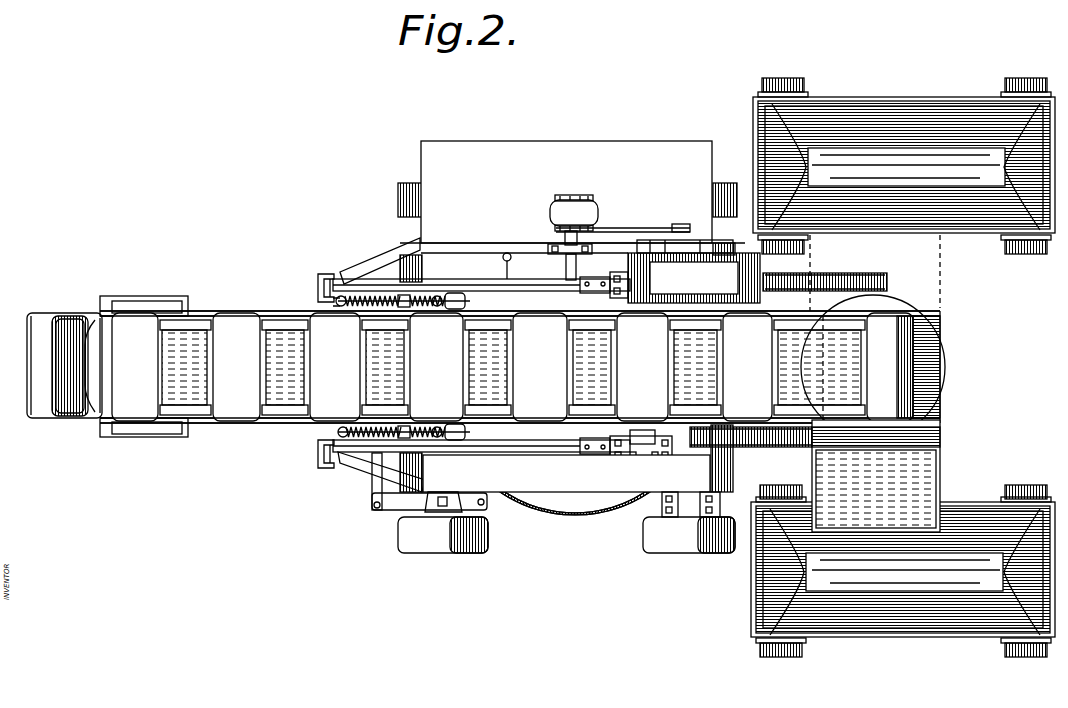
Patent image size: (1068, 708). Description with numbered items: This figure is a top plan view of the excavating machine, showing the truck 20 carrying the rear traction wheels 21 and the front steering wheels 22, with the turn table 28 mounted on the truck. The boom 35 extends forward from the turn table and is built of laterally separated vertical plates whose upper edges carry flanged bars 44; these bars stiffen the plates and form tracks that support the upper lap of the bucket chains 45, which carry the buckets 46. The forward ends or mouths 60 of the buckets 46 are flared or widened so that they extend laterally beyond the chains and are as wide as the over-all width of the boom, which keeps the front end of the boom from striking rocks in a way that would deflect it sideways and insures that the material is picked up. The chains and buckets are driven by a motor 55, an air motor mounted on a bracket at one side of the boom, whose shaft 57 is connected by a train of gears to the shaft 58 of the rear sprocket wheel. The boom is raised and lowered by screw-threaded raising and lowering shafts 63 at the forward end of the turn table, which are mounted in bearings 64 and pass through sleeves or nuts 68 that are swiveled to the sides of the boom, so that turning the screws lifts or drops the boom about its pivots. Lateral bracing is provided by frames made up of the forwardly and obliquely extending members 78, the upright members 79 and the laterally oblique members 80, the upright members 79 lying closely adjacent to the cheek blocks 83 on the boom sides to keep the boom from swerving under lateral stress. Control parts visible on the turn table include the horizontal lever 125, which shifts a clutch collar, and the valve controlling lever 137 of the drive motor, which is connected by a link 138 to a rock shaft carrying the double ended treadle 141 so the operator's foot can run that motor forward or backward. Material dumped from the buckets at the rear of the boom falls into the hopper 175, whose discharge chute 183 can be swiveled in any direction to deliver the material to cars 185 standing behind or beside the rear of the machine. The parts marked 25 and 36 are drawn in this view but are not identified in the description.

The truck 20 is at (578, 514).
The rear traction wheels 21 is at (726, 182).
The front steering wheels 22 is at (406, 182).
The bracket 25 is at (432, 502).
The turn table 28 is at (566, 473).
The boom 35 is at (285, 367).
The plate 36 is at (565, 307).
The flanged bars 44 is at (247, 314).
The bucket chains 45 is at (250, 312).
The buckets 46 is at (198, 367).
The motor 55 is at (694, 271).
The shaft 57 is at (707, 447).
The shaft of the rear sprocket wheel 58 is at (844, 273).
The mouths of the buckets 60 is at (72, 310).
The screw-threaded raising and lowering shafts 63 is at (346, 299).
The bearings 64 is at (446, 296).
The sleeves or nuts 68 is at (406, 304).
The forwardly and obliquely extending members 78 is at (480, 279).
The upright members 79 is at (334, 300).
The laterally oblique members 80 is at (380, 257).
The cheek blocks 83 is at (362, 414).
The horizontal lever 125 is at (511, 265).
The valve controlling lever 137 is at (682, 223).
The link 138 is at (612, 227).
The double ended foot piece or treadle 141 is at (586, 200).
The hopper 175 is at (948, 342).
The discharge spout or chute 183 is at (944, 450).
The cars 185 is at (932, 97).